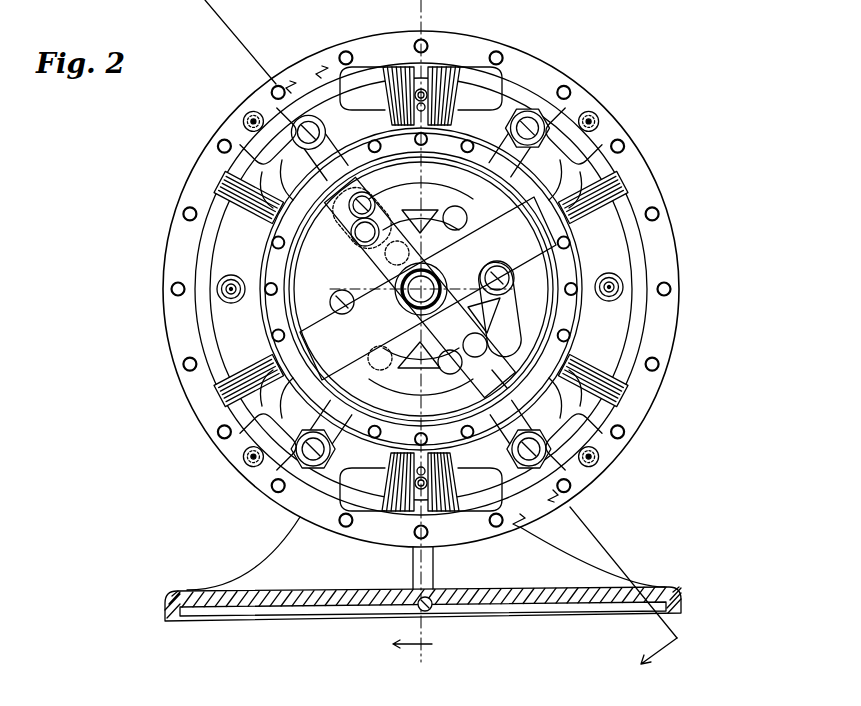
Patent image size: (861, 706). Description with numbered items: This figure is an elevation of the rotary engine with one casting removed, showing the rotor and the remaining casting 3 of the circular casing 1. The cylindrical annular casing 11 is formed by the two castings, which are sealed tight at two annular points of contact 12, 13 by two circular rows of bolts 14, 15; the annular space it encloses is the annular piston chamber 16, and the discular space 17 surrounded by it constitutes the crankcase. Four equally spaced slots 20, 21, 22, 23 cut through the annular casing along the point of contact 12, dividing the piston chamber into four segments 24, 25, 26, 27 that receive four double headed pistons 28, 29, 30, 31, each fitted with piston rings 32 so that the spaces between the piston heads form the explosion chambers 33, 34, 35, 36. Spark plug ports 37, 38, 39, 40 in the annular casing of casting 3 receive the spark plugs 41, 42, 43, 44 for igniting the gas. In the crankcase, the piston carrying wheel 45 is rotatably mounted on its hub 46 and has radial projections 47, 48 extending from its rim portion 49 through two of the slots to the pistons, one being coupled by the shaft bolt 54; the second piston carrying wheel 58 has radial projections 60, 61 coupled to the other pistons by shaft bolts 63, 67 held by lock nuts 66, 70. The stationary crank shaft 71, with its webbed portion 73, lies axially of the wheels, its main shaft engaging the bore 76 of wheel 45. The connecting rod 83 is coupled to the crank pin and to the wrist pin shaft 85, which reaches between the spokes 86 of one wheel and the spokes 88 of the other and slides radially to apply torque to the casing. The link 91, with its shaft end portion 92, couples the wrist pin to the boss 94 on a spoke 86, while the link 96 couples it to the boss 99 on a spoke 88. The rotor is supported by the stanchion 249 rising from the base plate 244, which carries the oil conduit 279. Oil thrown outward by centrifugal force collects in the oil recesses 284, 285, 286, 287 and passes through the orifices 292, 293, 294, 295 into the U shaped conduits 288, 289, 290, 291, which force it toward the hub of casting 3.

The circular casing 1 is at (498, 541).
The casting 3 is at (660, 390).
The cylindrical annular casing 11 is at (648, 312).
The annular point of contact 12 is at (590, 328).
The annular point of contact 13 is at (185, 263).
The bolts 14 is at (293, 250).
The bolts 15 is at (497, 57).
The annular piston chamber 16 is at (510, 94).
The discular space (crankcase) 17 is at (276, 302).
The slot 20 is at (288, 193).
The slot 21 is at (560, 180).
The slot 22 is at (544, 428).
The slot 23 is at (300, 396).
The segment 24 is at (376, 146).
The segment 25 is at (548, 222).
The segment 26 is at (456, 436).
The segment 27 is at (290, 356).
The double headed piston 28 is at (345, 76).
The double headed piston 29 is at (580, 168).
The double headed piston 30 is at (600, 421).
The double headed piston 31 is at (321, 495).
The piston rings 32 is at (610, 186).
The explosion chamber 33 is at (426, 66).
The explosion chamber 34 is at (638, 236).
The explosion chamber 35 is at (426, 520).
The explosion chamber 36 is at (205, 302).
The spark plug port 37 is at (418, 70).
The spark plug port 38 is at (614, 296).
The spark plug port 39 is at (415, 520).
The spark plug port 40 is at (229, 301).
The spark plug 41 is at (440, 97).
The spark plug 42 is at (611, 276).
The spark plug 43 is at (450, 480).
The spark plug 44 is at (230, 278).
The piston carrying wheel 45 is at (470, 206).
The hub 46 is at (470, 279).
The radial projection 47 is at (346, 90).
The radial projection 48 is at (492, 475).
The rim portion 49 is at (505, 309).
The shaft bolt 54 is at (524, 444).
The piston carrying wheel 58 is at (312, 140).
The radial projection 60 is at (512, 130).
The radial projection 61 is at (346, 450).
The shaft bolt 63 is at (520, 146).
The lock nut 66 is at (536, 110).
The shaft bolt 67 is at (320, 436).
The lock nut 70 is at (306, 476).
The stationary crank shaft 71 is at (386, 306).
The webbed portion 73 is at (380, 258).
The bore 76 is at (432, 312).
The connecting rod 83 is at (420, 218).
The wrist pin shaft 85 is at (352, 212).
The spokes 86 is at (352, 233).
The spokes 88 is at (385, 191).
The link 91 is at (360, 246).
The shaft end portion 92 is at (348, 262).
The boss 94 is at (330, 296).
The link 96 is at (386, 196).
The boss 99 is at (450, 197).
The base plate 244 is at (541, 619).
The stanchion 249 is at (296, 543).
The conduit 279 is at (440, 614).
The oil recess 284 is at (240, 142).
The oil recess 285 is at (604, 138).
The oil recess 286 is at (596, 452).
The oil recess 287 is at (265, 470).
The U shaped conduit 288 is at (258, 114).
The U shaped conduit 289 is at (592, 114).
The U shaped conduit 290 is at (598, 459).
The U shaped conduit 291 is at (250, 465).
The orifice 292 is at (248, 120).
The orifice 293 is at (598, 120).
The orifice 294 is at (604, 466).
The orifice 295 is at (248, 460).